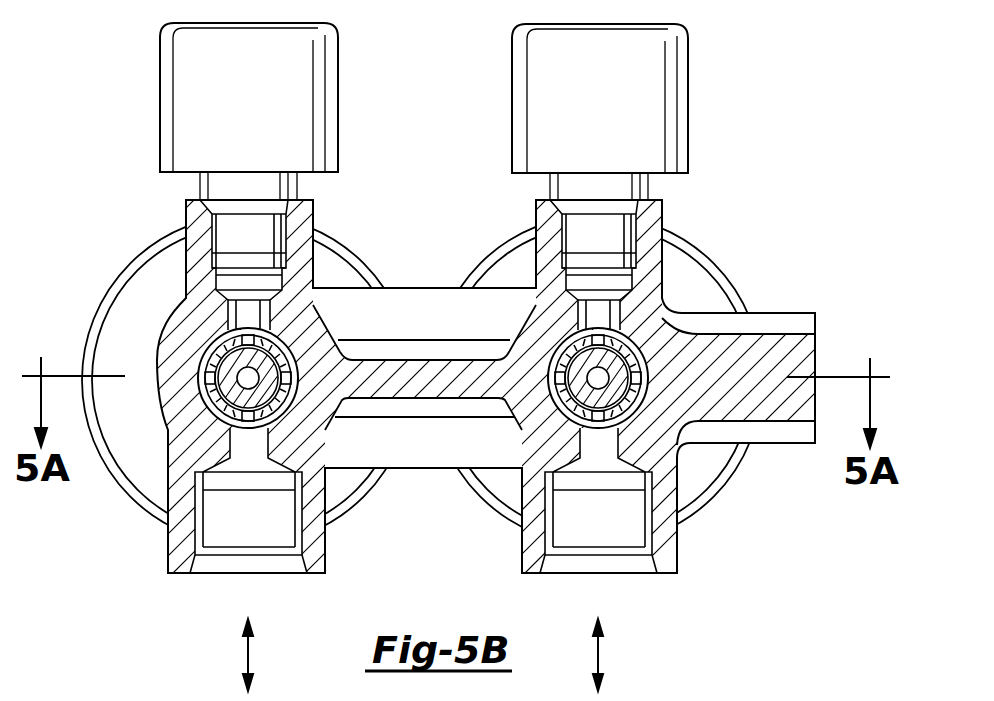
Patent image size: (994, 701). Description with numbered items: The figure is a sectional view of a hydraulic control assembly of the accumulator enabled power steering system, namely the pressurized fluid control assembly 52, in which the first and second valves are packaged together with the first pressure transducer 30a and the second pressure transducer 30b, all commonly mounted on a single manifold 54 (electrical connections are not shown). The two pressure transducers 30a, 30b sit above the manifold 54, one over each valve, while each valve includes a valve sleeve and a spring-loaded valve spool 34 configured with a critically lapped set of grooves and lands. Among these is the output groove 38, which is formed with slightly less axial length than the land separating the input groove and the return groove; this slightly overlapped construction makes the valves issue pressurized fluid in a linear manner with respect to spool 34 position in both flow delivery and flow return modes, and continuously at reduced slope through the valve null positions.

The first pressure transducer 30a is at (318, 76).
The second pressure transducer 30b is at (543, 126).
The spring-loaded valve spool 34 is at (215, 380).
The output groove 38 is at (318, 340).
The pressurized fluid control assembly 52 is at (132, 504).
The manifold 54 is at (433, 470).